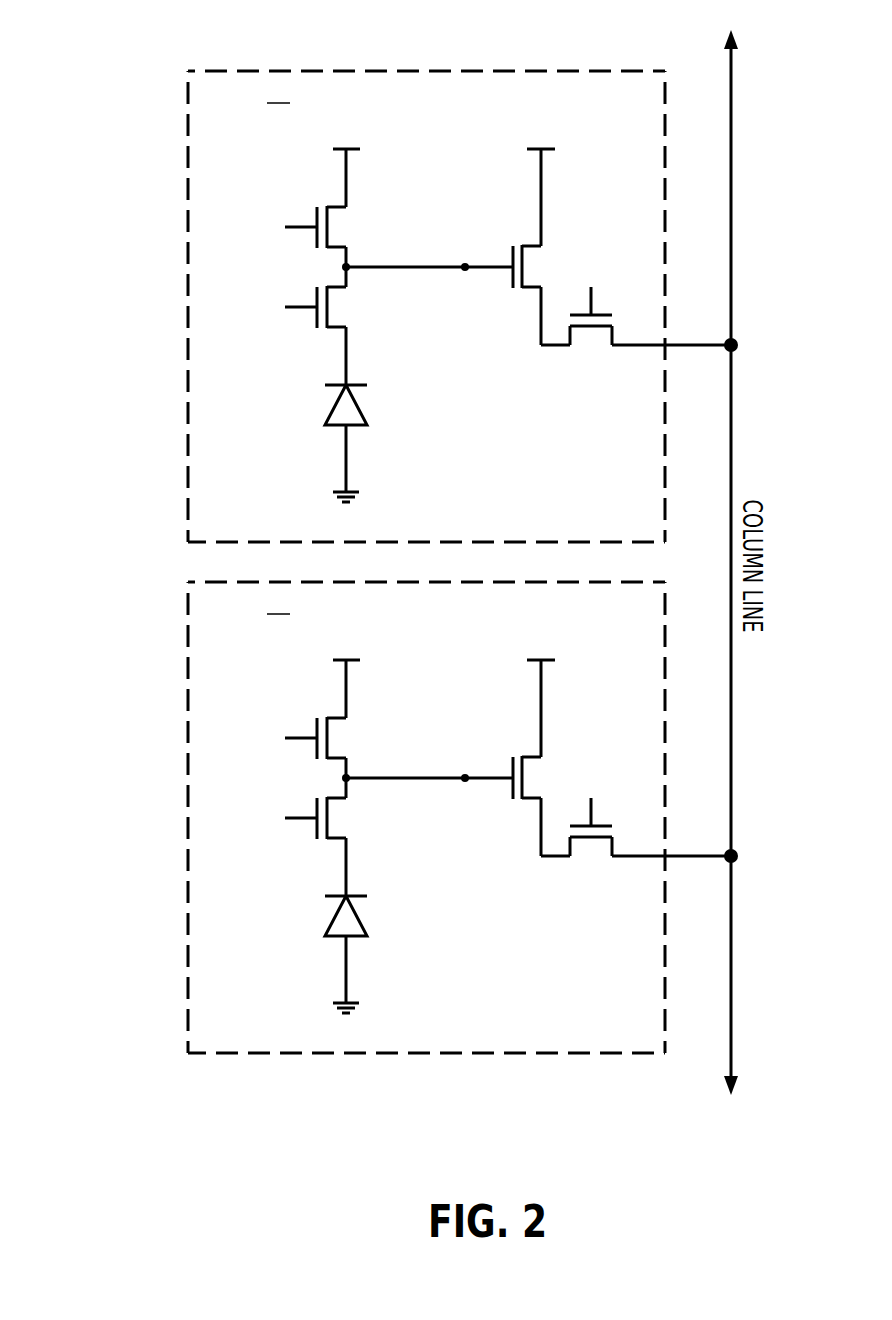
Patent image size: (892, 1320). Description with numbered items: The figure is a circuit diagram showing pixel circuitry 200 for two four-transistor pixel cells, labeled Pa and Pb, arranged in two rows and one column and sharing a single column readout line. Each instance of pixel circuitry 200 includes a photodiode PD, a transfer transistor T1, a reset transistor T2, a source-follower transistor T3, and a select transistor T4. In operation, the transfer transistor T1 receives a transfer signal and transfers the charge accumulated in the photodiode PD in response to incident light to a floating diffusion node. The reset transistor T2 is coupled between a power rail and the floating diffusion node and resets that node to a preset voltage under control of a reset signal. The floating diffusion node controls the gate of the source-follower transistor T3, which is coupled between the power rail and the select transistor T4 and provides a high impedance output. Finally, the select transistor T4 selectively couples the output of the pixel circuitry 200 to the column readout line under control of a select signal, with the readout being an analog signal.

The pixel circuitry 200 is at (188, 111).
The transfer transistor T1 is at (337, 562).
The reset transistor T2 is at (337, 482).
The source-follower transistor T3 is at (532, 522).
The select transistor T4 is at (591, 591).
The photodiode PD is at (327, 661).